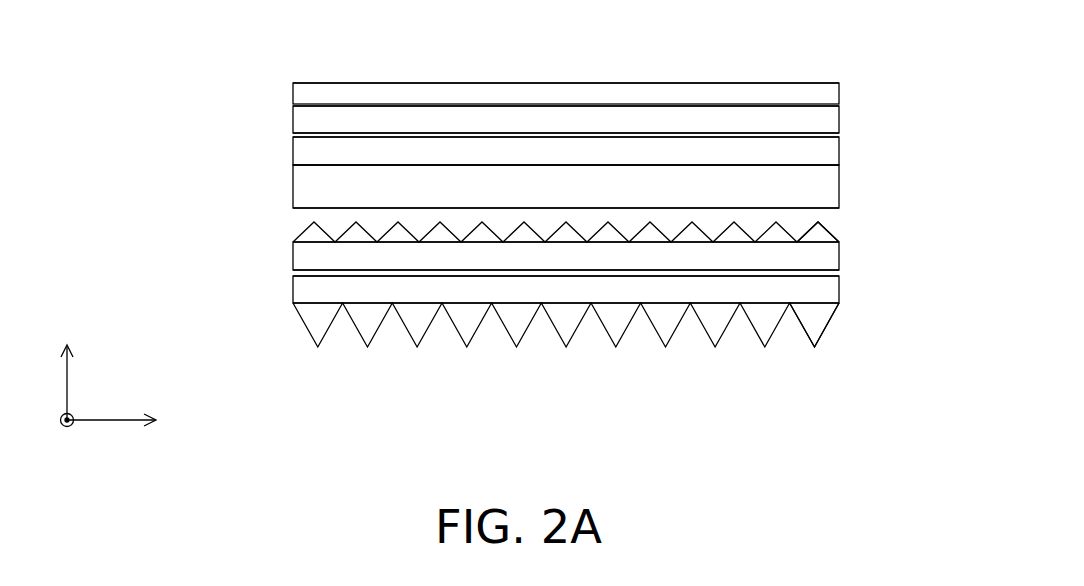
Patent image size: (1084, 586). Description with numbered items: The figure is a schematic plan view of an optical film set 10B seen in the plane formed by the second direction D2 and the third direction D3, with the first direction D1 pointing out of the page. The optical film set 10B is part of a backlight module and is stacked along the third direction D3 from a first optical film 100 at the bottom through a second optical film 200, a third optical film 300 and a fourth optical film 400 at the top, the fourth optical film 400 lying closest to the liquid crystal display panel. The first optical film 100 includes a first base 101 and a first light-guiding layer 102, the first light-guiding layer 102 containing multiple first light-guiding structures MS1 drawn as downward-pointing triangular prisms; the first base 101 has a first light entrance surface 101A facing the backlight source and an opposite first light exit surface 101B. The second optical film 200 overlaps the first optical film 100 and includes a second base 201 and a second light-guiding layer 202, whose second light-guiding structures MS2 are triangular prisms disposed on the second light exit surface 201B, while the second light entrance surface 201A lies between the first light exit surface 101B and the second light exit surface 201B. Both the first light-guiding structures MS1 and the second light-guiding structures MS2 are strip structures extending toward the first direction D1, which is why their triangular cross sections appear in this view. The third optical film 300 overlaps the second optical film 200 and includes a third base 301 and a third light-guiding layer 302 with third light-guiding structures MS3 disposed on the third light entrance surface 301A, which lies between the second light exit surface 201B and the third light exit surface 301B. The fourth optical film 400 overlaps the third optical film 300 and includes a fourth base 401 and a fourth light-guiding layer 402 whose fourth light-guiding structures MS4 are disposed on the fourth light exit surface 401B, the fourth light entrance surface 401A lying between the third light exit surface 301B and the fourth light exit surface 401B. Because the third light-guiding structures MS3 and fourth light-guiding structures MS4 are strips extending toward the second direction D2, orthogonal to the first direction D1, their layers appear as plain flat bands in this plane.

The optical film set 10B is at (104, 18).
The first optical film 100 is at (152, 20).
The first base 101 is at (302, 287).
The first light-guiding layer 102 is at (312, 315).
The second optical film 200 is at (152, 105).
The second base 201 is at (305, 257).
The second light-guiding layer 202 is at (310, 234).
The third optical film 300 is at (152, 188).
The third base 301 is at (302, 147).
The third light-guiding layer 302 is at (310, 178).
The fourth optical film 400 is at (152, 272).
The fourth base 401 is at (305, 120).
The fourth light-guiding layer 402 is at (312, 96).
The first light-guiding structures MS1 is at (818, 322).
The second light-guiding structures MS2 is at (818, 235).
The third light-guiding structures MS3 is at (813, 190).
The fourth light-guiding structures MS4 is at (808, 95).
The first light entrance surface 101A is at (809, 303).
The first light exit surface 101B is at (795, 278).
The second light entrance surface 201A is at (796, 268).
The second light exit surface 201B is at (812, 244).
The third light entrance surface 301A is at (783, 163).
The third light exit surface 301B is at (797, 139).
The fourth light entrance surface 401A is at (793, 131).
The fourth light exit surface 401B is at (803, 107).
The first direction D1 is at (58, 436).
The second direction D2 is at (126, 419).
The third direction D3 is at (67, 366).